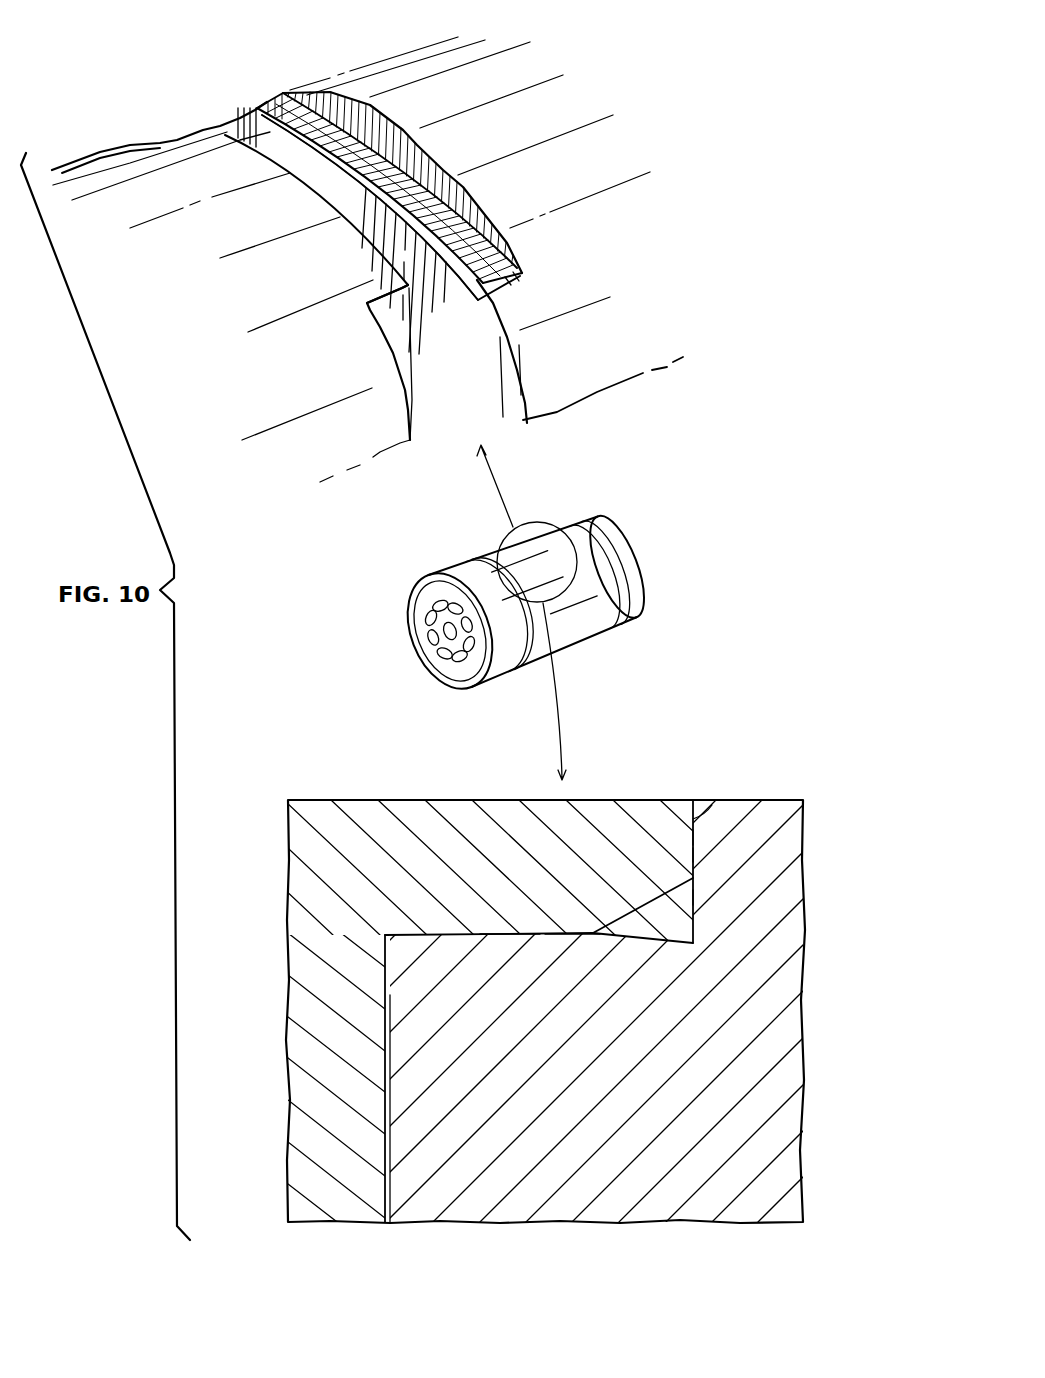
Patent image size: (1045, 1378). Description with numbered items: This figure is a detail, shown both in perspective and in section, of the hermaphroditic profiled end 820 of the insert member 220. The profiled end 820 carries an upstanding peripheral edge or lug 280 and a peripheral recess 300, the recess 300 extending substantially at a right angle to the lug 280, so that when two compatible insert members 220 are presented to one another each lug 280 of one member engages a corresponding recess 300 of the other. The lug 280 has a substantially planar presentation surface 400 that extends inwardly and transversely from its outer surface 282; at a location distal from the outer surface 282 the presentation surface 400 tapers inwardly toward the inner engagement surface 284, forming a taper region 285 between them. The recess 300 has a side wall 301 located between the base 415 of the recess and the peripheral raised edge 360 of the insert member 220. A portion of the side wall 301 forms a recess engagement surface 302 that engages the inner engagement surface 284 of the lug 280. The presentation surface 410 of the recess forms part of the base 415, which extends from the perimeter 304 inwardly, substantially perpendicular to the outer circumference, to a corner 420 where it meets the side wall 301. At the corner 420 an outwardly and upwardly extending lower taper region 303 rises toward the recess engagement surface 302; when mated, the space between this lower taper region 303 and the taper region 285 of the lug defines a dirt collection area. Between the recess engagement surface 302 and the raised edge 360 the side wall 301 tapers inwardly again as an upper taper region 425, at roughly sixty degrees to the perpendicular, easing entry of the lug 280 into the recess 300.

The insert member 220 is at (470, 551).
The upstanding peripheral edge or lug 280 is at (308, 223).
The outer surface of the upstanding lug 282 is at (233, 162).
The inner engagement surface 284 is at (378, 310).
The taper region 285 is at (645, 903).
The peripheral recess 300 is at (373, 147).
The side wall of the recess 301 is at (541, 952).
The recess engagement surface 302 is at (567, 937).
The lower taper region 303 is at (475, 237).
The perimeter of the recess 304 is at (697, 790).
The peripheral raised edge 360 is at (473, 367).
The presentation surface of the lug 400 is at (679, 859).
The presentation surface of the recess 410 is at (693, 819).
The base of the recess 415 is at (706, 842).
The corner 420 is at (518, 275).
The upper taper region 425 is at (370, 190).
The hermaphroditic profiled end 820 is at (269, 160).